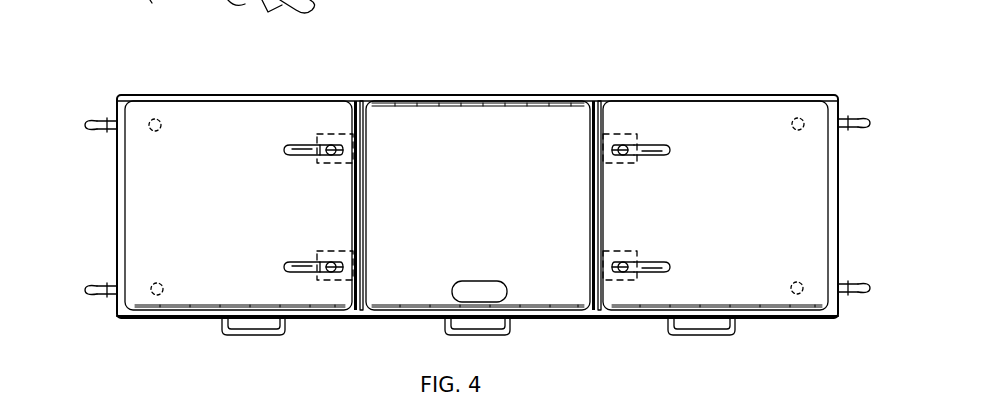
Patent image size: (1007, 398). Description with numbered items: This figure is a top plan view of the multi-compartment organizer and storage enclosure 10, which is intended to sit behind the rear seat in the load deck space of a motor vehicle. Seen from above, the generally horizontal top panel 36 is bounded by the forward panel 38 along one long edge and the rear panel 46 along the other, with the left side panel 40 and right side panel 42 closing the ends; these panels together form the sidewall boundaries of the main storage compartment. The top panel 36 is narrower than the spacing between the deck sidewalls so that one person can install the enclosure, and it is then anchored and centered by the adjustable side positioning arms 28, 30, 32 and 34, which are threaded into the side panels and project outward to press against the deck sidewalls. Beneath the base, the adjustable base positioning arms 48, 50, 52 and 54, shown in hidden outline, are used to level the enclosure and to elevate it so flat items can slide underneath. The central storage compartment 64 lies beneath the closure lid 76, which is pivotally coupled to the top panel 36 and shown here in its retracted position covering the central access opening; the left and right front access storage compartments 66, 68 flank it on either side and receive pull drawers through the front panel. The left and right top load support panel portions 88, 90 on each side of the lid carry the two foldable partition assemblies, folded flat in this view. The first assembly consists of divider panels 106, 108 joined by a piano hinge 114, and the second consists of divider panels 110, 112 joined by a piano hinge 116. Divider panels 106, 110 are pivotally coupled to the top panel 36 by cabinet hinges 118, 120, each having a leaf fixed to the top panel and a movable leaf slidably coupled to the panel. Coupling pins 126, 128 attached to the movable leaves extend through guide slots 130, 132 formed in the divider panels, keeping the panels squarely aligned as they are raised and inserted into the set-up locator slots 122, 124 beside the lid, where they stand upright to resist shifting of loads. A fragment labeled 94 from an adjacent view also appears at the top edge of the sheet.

The storage enclosure 10 is at (113, 58).
The side positioning arm 28 is at (108, 296).
The side positioning arm 30 is at (106, 128).
The side positioning arm 32 is at (846, 296).
The side positioning arm 34 is at (845, 130).
The top panel 36 is at (318, 100).
The forward panel 38 is at (384, 322).
The left side panel 40 is at (118, 268).
The right side panel 42 is at (840, 224).
The rear panel 46 is at (604, 100).
The base positioning arm 48 is at (162, 286).
The base positioning arm 50 is at (158, 118).
The base positioning arm 52 is at (791, 292).
The base positioning arm 54 is at (796, 131).
The central storage compartment 64 is at (505, 228).
The left front access storage compartment 66 is at (232, 218).
The right front access storage compartment 68 is at (746, 233).
The closure lid 76 is at (475, 118).
The left top load support panel portion 88 is at (200, 100).
The right top load support panel portion 90 is at (742, 100).
The hinge (adjacent figure) 94 is at (331, 9).
The first divider panel 106 is at (166, 213).
The second divider panel 108 is at (224, 397).
The first divider panel 110 is at (800, 258).
The second divider panel 112 is at (722, 397).
The piano hinge 114 is at (220, 310).
The piano hinge 116 is at (780, 316).
The cabinet hinge 118 is at (330, 254).
The cabinet hinge 120 is at (316, 142).
The set-up locator slot 122 is at (357, 192).
The set-up locator slot 124 is at (596, 150).
The coupling pin 126 is at (343, 268).
The coupling pin 128 is at (343, 150).
The guide slot 130 is at (296, 272).
The guide slot 132 is at (302, 156).